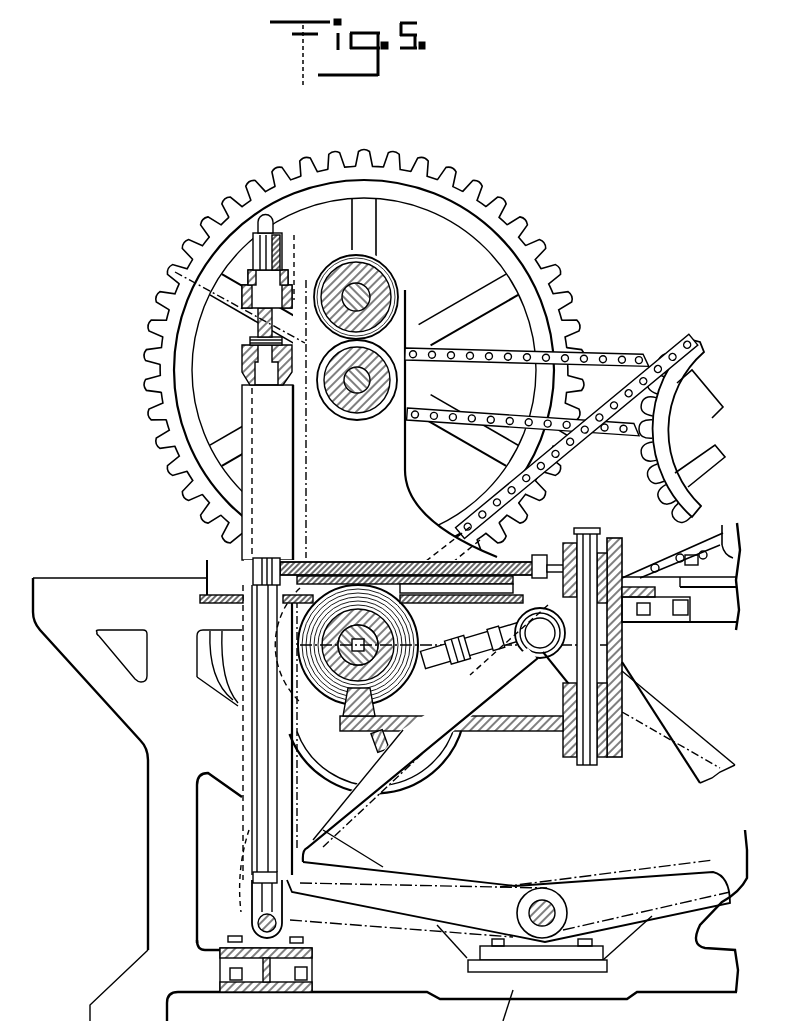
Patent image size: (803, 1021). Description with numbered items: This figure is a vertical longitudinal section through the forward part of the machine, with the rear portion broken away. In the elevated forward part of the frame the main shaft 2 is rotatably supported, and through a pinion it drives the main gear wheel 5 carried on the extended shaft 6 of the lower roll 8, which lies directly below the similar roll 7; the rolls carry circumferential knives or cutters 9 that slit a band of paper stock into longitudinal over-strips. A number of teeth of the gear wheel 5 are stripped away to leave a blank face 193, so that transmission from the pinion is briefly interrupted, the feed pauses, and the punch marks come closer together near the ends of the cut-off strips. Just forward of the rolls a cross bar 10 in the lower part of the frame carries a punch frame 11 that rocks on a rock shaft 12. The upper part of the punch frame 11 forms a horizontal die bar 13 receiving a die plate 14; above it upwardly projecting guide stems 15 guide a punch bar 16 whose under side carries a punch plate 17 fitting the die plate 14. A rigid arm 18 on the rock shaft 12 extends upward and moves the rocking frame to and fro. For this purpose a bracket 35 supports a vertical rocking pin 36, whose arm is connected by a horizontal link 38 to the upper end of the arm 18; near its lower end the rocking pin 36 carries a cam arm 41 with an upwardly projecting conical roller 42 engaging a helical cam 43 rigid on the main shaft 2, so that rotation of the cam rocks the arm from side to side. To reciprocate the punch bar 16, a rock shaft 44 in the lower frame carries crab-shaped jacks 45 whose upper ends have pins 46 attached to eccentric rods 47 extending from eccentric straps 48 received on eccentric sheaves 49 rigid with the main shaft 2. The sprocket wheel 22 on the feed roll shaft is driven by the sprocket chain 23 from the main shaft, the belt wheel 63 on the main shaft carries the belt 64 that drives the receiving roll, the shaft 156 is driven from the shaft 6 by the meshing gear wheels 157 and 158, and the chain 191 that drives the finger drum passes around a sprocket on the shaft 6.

The main shaft 2 is at (368, 638).
The main gear wheel 5 is at (551, 293).
The extended shaft 6 is at (348, 388).
The roll 7 is at (394, 287).
The roll 8 is at (360, 406).
The knives or cutters 9 is at (406, 300).
The cross bar 10 is at (313, 955).
The punch frame 11 is at (273, 497).
The rock shaft 12 is at (256, 923).
The die bar 13 is at (245, 357).
The die plate 14 is at (250, 340).
The guide stems 15 is at (266, 212).
The punch bar 16 is at (250, 277).
The punch plate 17 is at (258, 322).
The rigid arm 18 is at (262, 733).
The sprocket wheel 22 is at (701, 395).
The sprocket chain 23 is at (577, 447).
The bracket 35 is at (623, 653).
The rocking pin 36 is at (587, 765).
The horizontal link 38 is at (357, 563).
The cam arm 41 is at (515, 724).
The conical roller 42 is at (342, 715).
The helical cam 43 is at (319, 590).
The rock shaft 44 is at (544, 908).
The jacks 45 is at (682, 726).
The pins 46 is at (542, 643).
The eccentric rods 47 is at (470, 636).
The eccentric straps 48 is at (436, 676).
The eccentric sheaves 49 is at (386, 736).
The belt wheel 63 is at (470, 740).
The belt 64 is at (395, 787).
The shaft 156 is at (364, 300).
The gear wheel 157 is at (406, 330).
The gear wheel 158 is at (407, 382).
The chain 191 is at (617, 358).
The blank face 193 is at (185, 270).